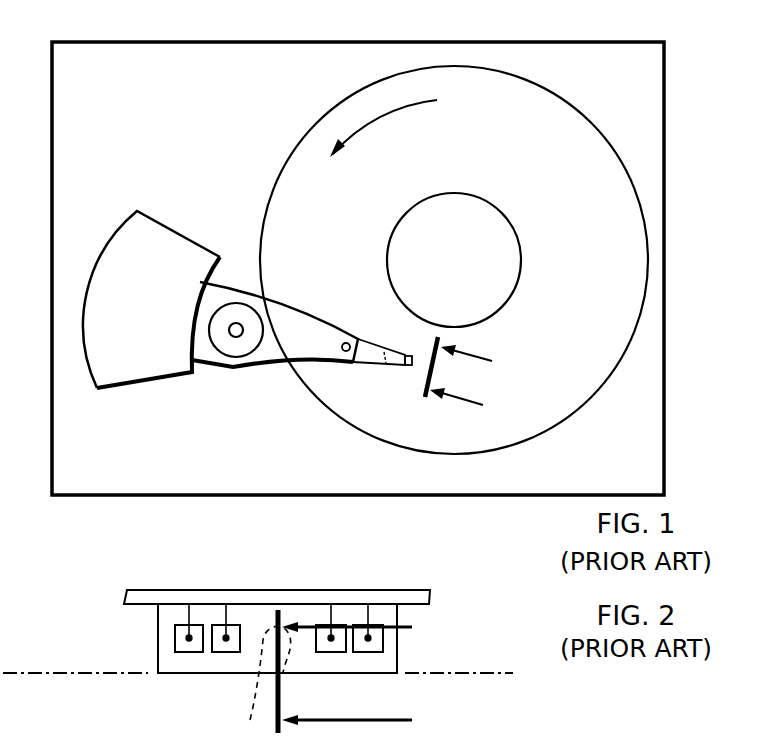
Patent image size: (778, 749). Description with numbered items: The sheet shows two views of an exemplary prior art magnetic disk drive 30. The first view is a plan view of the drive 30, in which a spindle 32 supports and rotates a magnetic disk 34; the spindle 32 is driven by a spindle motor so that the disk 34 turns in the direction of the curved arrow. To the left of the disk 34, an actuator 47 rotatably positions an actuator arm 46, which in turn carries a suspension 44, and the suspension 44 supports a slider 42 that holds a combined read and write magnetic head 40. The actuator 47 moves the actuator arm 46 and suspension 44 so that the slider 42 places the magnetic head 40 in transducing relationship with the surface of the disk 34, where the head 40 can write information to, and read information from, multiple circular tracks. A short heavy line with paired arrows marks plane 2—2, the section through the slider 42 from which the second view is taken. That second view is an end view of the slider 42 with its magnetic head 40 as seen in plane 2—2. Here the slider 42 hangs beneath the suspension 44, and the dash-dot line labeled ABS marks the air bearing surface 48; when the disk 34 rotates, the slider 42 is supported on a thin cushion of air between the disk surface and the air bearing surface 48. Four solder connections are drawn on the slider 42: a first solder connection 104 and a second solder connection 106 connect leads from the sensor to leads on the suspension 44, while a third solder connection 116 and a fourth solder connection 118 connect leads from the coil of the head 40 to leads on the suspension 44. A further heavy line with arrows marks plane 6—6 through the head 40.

In FIG. 1, the magnetic disk drive 30 is at (681, 44).
In FIG. 1, the spindle 32 is at (474, 194).
In FIG. 1, the magnetic disk 34 is at (577, 260).
In FIG. 1, the magnetic head 40 is at (413, 367).
In FIG. 2, the magnetic head 40 is at (257, 703).
In FIG. 1, the slider 42 is at (410, 356).
In FIG. 2, the slider 42 is at (158, 636).
In FIG. 1, the suspension 44 is at (367, 365).
In FIG. 1, the actuator arm 46 is at (282, 303).
In FIG. 1, the actuator 47 is at (170, 228).
In FIG. 1, the plane 2— 2 is at (473, 386).
In FIG. 2, the air bearing surface (ABS) 48 is at (47, 674).
In FIG. 2, the first solder connection 104 is at (173, 630).
In FIG. 2, the third solder connection 116 is at (208, 627).
In FIG. 2, the fourth solder connection 118 is at (312, 628).
In FIG. 2, the second solder connection 106 is at (348, 627).
In FIG. 2, the plane 6— 6 is at (360, 677).